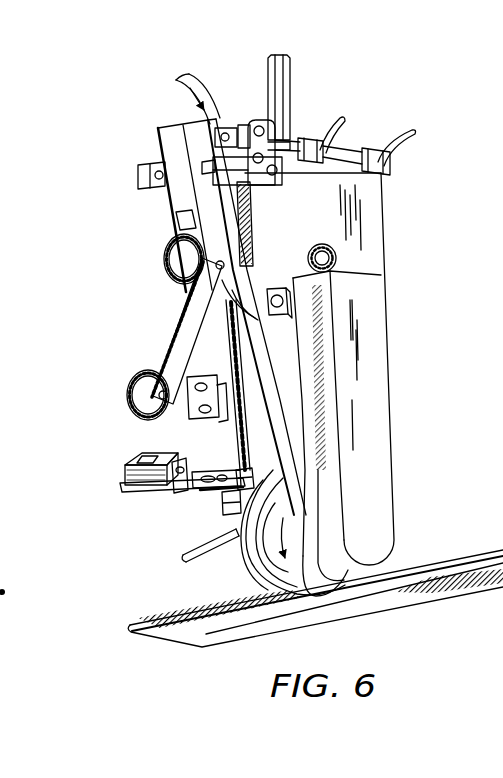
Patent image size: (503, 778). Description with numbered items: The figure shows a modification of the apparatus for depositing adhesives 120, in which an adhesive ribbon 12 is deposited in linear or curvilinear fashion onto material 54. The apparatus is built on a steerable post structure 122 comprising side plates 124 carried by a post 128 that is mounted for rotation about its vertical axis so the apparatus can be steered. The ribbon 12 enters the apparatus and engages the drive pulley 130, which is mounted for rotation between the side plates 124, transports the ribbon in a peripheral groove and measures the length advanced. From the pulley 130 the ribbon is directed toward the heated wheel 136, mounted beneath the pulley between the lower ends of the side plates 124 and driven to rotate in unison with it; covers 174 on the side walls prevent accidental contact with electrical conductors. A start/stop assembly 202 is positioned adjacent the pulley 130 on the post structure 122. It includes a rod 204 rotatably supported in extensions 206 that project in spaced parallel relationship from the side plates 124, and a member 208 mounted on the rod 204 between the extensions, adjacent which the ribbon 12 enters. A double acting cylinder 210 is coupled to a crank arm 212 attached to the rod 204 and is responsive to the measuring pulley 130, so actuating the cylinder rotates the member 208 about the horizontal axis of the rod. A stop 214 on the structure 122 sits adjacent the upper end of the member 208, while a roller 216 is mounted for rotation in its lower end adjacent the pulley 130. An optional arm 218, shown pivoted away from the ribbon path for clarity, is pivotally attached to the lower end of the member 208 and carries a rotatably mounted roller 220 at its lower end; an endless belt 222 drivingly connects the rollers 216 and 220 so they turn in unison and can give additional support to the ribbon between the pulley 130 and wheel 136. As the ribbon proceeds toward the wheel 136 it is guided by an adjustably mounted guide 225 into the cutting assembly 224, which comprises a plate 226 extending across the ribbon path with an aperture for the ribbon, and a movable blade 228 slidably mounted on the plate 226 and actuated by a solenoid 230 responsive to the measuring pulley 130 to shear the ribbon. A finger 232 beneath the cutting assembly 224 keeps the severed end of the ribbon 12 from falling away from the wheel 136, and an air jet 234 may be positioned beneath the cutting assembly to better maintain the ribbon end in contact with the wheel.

The adhesive ribbon 12 is at (178, 98).
The material 54 is at (410, 602).
The apparatus for depositing adhesives 120 is at (420, 177).
The steerable post structure 122 is at (320, 95).
The side plates 124 is at (360, 232).
The post 128 is at (292, 58).
The drive pulley 130 is at (240, 303).
The wheel 136 is at (308, 585).
The covers 174 is at (367, 373).
The start/stop assembly 202 is at (142, 131).
The rod 204 is at (163, 170).
The extensions 206 is at (138, 176).
The member 208 is at (185, 213).
The double acting cylinder 210 is at (342, 148).
The crank arm 212 is at (272, 150).
The stop 214 is at (219, 126).
The roller 216 is at (165, 266).
The arm 218 is at (180, 352).
The roller 220 is at (127, 392).
The endless belt 222 is at (166, 310).
The cutting assembly 224 is at (146, 504).
The guide 225 is at (200, 398).
The plate 226 is at (244, 468).
The movable blade 228 is at (190, 492).
The solenoid 230 is at (146, 460).
The finger 232 is at (228, 505).
The air jet 234 is at (193, 557).